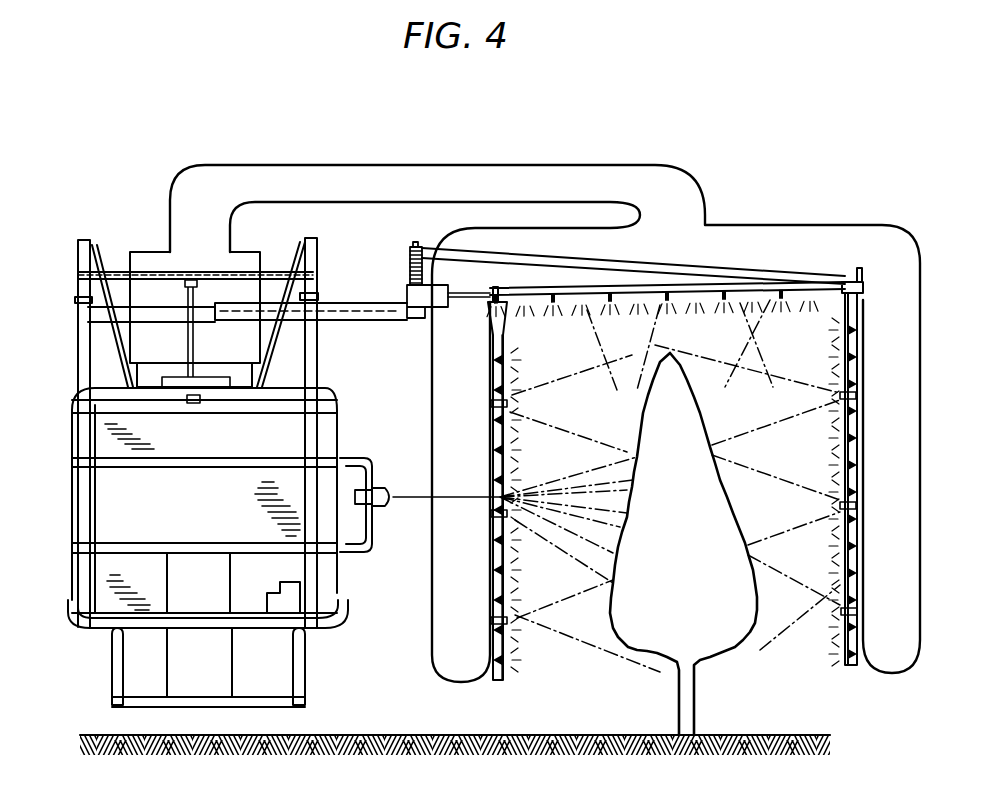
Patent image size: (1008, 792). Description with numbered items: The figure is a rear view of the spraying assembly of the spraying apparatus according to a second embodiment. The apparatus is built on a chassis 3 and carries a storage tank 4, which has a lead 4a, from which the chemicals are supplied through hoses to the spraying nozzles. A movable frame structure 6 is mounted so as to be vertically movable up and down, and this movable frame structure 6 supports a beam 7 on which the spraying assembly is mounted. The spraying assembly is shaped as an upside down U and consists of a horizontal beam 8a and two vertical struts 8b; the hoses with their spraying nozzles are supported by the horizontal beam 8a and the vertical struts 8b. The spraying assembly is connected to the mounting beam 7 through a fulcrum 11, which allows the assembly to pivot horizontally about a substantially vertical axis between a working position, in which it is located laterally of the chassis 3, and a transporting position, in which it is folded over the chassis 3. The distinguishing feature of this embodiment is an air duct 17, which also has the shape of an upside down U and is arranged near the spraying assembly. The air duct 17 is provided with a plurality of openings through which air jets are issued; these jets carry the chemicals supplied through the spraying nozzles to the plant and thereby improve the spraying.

The air duct 17 is at (430, 183).
The lead 4a is at (170, 388).
The fulcrum 11 is at (410, 263).
The beam 7 is at (376, 310).
The movable frame structure 6 is at (312, 340).
The horizontal beam 8a is at (788, 287).
The vertical struts 8b is at (848, 303).
The storage tank 4 is at (297, 520).
The chassis 3 is at (297, 670).